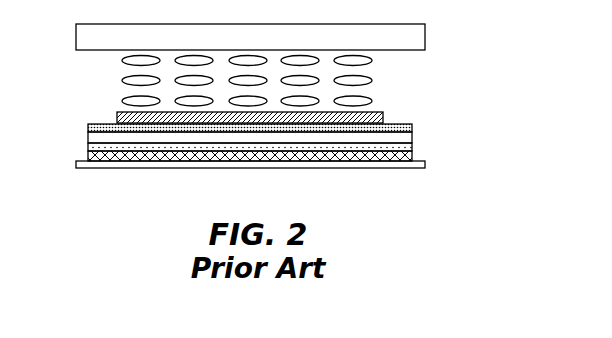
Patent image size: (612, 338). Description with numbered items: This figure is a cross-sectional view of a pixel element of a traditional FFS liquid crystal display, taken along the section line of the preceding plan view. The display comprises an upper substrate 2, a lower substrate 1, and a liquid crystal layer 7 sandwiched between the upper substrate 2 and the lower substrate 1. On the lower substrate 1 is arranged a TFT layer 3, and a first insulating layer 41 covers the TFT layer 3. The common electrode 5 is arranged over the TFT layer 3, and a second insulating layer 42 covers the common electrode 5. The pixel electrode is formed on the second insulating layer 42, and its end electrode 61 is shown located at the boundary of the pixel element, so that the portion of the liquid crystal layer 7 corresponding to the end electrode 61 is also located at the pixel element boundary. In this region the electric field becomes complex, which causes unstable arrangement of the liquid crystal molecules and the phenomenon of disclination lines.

The lower substrate 1 is at (425, 162).
The upper substrate 2 is at (415, 35).
The TFT layer 3 is at (87, 157).
The common electrode 5 is at (87, 140).
The liquid crystal layer 7 is at (433, 107).
The first insulating layer 41 is at (412, 143).
The second insulating layer 42 is at (412, 124).
The end electrode 61 is at (116, 121).